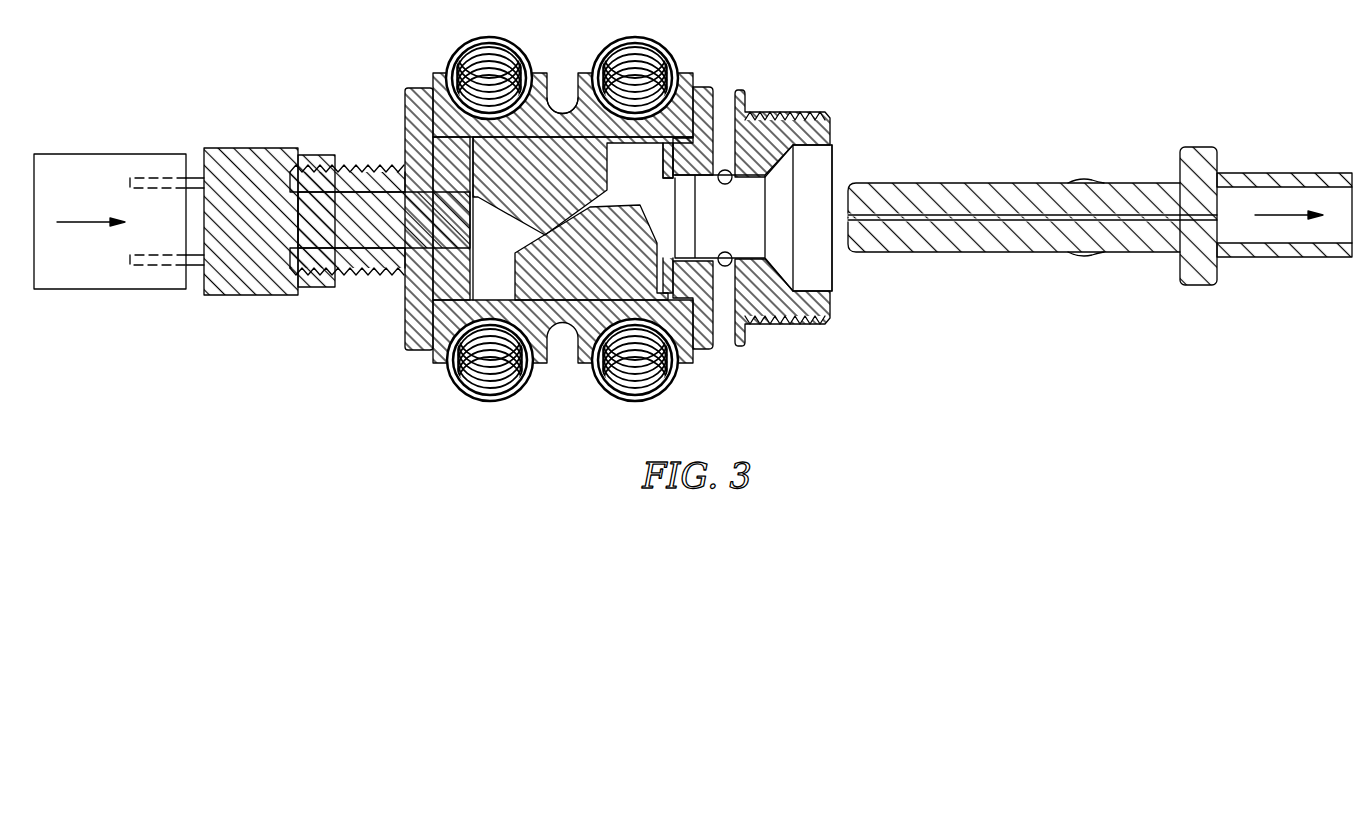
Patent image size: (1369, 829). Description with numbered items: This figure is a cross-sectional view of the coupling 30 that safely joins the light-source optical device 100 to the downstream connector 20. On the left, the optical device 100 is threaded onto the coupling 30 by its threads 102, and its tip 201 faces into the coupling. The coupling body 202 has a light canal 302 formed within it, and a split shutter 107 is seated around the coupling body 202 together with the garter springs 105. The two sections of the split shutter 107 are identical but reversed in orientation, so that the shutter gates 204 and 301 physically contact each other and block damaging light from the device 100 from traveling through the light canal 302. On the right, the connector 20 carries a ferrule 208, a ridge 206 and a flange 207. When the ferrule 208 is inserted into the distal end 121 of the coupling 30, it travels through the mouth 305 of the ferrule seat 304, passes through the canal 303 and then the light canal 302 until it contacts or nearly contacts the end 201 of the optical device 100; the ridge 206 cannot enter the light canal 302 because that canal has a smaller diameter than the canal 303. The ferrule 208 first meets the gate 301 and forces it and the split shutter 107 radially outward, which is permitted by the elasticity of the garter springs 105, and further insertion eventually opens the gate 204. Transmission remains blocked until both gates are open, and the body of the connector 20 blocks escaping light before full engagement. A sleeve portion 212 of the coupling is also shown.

The optical device 100 is at (300, 137).
The threads 102 is at (356, 165).
The tip 201 is at (472, 219).
The shutter gate 204 is at (563, 218).
The split shutter 107 is at (546, 73).
The garter springs 105 is at (490, 37).
The shutter gate 301 is at (591, 252).
The coupling body 202 is at (706, 87).
The light canal 302 is at (653, 214).
The coupling sleeve 212 is at (727, 115).
The canal 303 is at (768, 120).
The distal end 121 is at (858, 300).
The ferrule seat 304 is at (832, 130).
The mouth 305 is at (832, 182).
The ferrule 208 is at (1037, 183).
The ridge 206 is at (1087, 257).
The flange 207 is at (1197, 147).
The downstream connector 20 is at (1353, 295).
The coupling 30 is at (432, 410).